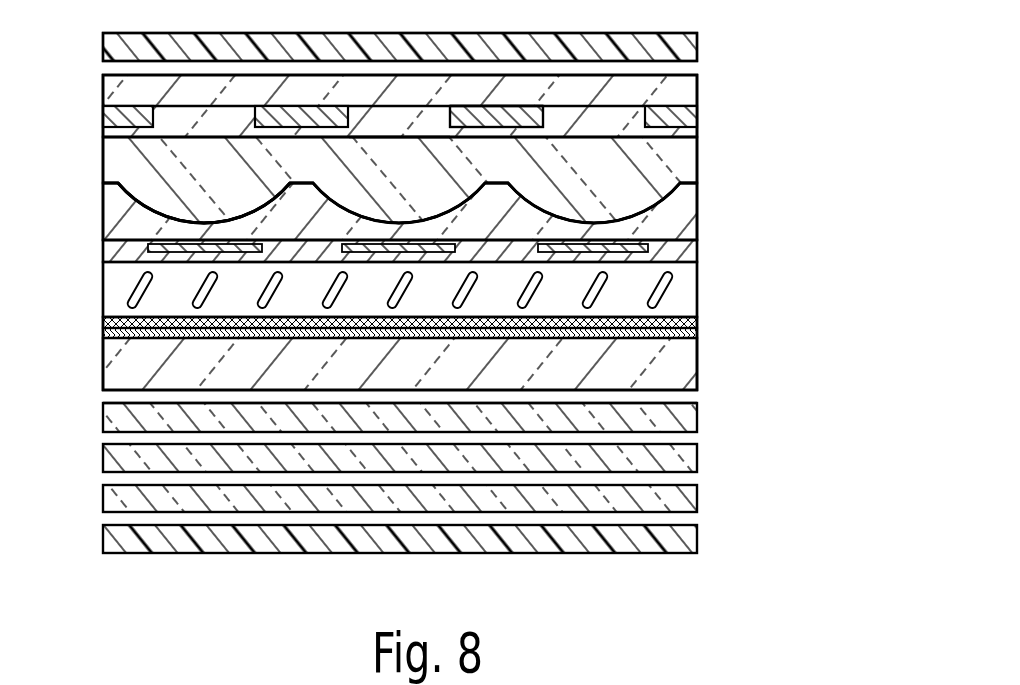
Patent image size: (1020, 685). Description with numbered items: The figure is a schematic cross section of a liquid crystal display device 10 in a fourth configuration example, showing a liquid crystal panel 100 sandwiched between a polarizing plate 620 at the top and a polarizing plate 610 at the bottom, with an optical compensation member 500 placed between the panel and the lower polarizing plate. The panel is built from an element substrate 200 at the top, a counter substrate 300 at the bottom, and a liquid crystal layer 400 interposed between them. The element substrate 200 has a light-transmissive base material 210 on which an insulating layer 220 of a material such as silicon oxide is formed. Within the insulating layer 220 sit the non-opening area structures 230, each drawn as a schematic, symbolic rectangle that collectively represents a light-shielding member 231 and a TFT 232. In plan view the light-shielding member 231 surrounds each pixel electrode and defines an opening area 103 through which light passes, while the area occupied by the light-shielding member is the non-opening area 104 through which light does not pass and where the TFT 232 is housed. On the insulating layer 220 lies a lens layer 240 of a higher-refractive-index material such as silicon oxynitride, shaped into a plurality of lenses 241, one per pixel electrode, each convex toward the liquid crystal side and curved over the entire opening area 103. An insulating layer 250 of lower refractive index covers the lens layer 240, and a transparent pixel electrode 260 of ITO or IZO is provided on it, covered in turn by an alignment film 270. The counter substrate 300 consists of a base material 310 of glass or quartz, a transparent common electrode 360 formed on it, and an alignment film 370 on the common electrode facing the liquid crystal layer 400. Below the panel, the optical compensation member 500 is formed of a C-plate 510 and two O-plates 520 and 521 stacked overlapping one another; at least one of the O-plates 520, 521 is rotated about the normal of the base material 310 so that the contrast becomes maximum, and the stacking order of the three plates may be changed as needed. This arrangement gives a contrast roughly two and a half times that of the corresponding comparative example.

The liquid crystal display device 10 is at (63, 352).
The liquid crystal panel 100 is at (90, 75).
The opening area 103 is at (400, 120).
The non-opening area 104 is at (493, 98).
The element substrate 200 is at (776, 150).
The base material 210 is at (697, 82).
The insulating layer 220 is at (697, 135).
The non-opening area structure 230 is at (697, 115).
The light-shielding member 231 is at (494, 133).
The TFT 232 is at (496, 160).
The lens layer 240 is at (697, 165).
The lens 241 is at (338, 208).
The insulating layer 250 is at (697, 205).
The pixel electrode 260 is at (650, 235).
The alignment film 270 is at (697, 250).
The counter substrate 300 is at (775, 348).
The base material 310 is at (697, 360).
The common electrode 360 is at (697, 335).
The alignment film 370 is at (697, 322).
The liquid crystal layer 400 is at (690, 292).
The optical compensation member 500 is at (90, 405).
The C-plate 510 is at (692, 420).
The O-plate 520 is at (692, 460).
The O-plate 521 is at (692, 500).
The polarizing plate 610 is at (692, 540).
The polarizing plate 620 is at (697, 47).